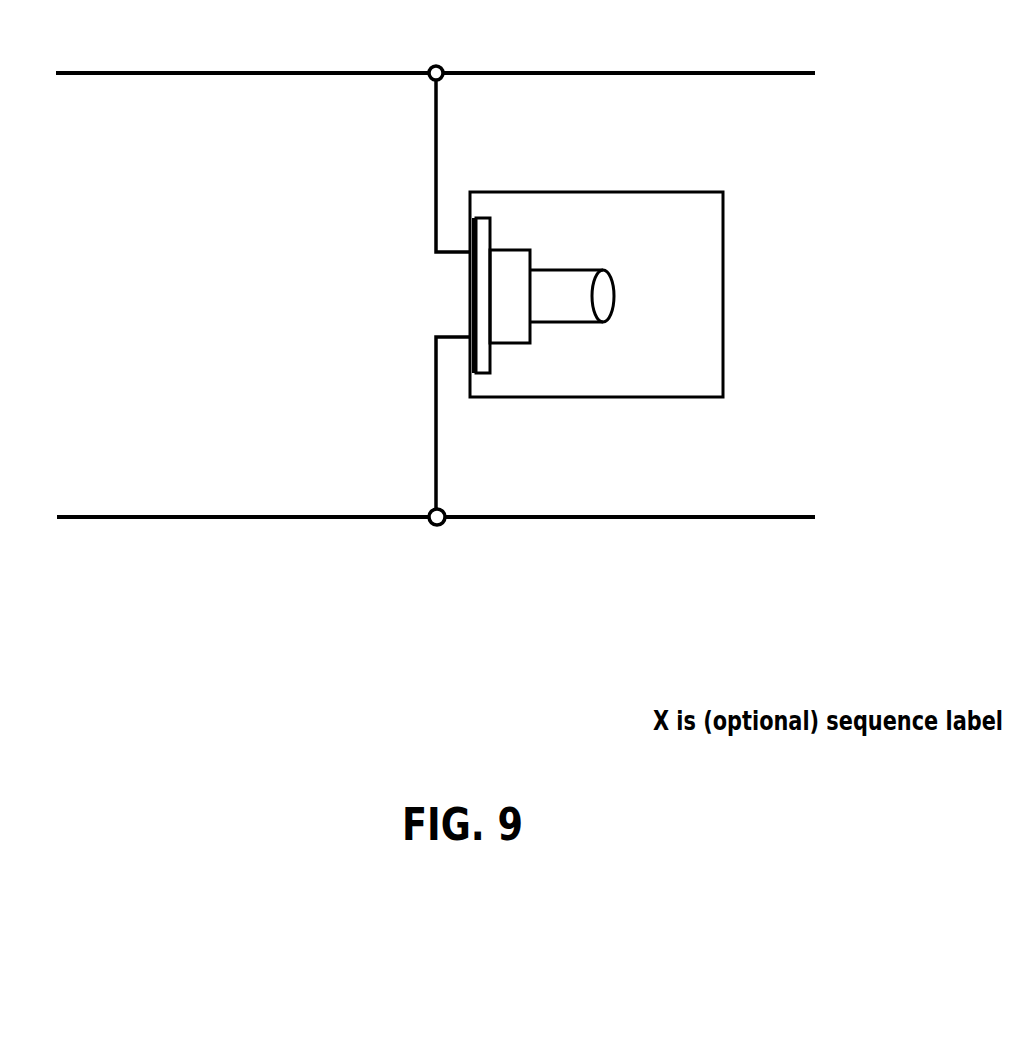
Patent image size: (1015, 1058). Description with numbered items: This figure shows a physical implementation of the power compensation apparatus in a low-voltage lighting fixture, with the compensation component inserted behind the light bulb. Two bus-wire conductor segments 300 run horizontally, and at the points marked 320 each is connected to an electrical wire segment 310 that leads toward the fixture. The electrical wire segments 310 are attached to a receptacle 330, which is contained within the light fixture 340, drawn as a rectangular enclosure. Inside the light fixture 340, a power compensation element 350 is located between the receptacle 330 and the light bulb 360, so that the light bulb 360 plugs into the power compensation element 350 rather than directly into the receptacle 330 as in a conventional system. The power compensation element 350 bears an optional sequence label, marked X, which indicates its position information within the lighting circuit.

The bus-wire conductor segment 300 is at (237, 55).
The electrical wire segment 310 is at (410, 124).
The circle 320 is at (445, 57).
The receptacle 330 is at (494, 378).
The light fixture 340 is at (732, 410).
The power compensation element 350 is at (519, 241).
The light bulb 360 is at (582, 339).